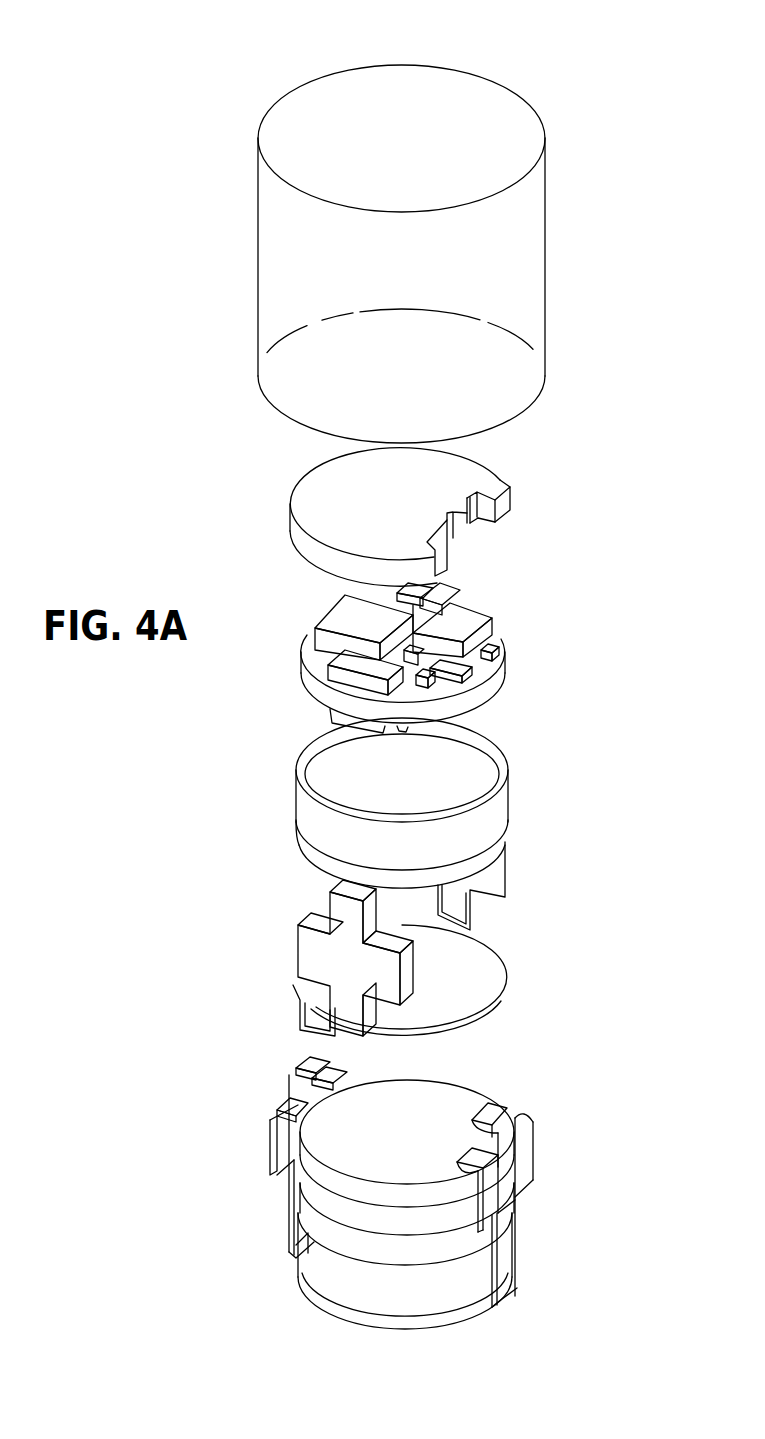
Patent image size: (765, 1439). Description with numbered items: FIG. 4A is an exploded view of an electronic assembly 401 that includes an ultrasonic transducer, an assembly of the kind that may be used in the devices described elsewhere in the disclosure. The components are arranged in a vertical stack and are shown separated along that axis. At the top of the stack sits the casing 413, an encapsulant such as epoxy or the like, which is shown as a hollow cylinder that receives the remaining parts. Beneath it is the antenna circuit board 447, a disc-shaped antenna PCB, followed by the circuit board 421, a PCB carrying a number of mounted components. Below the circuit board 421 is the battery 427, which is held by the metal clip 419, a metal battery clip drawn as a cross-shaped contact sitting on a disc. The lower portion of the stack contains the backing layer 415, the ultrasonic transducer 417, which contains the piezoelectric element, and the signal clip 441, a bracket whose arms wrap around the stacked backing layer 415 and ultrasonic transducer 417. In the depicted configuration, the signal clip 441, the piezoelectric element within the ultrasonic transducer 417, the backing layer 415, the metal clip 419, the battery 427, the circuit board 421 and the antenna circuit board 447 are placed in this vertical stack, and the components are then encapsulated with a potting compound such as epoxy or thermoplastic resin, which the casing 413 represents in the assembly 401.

The transducer assembly 401 is at (422, 33).
The casing 413 is at (522, 312).
The antenna circuit board 447 is at (487, 482).
The circuit board 421 is at (487, 687).
The battery 427 is at (497, 800).
The metal clip 419 is at (480, 977).
The backing layer 415 is at (440, 1110).
The signal clip 441 is at (527, 1163).
The ultrasonic transducer 417 is at (468, 1234).